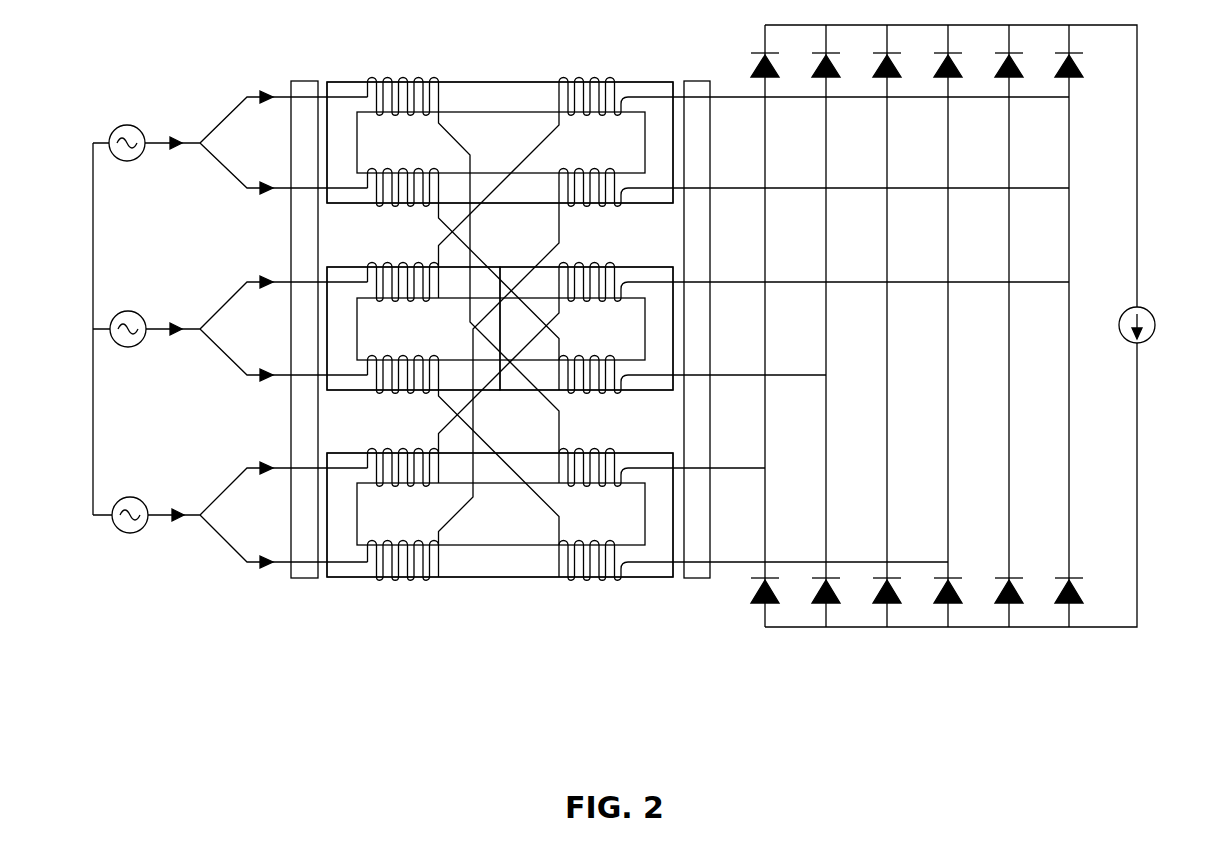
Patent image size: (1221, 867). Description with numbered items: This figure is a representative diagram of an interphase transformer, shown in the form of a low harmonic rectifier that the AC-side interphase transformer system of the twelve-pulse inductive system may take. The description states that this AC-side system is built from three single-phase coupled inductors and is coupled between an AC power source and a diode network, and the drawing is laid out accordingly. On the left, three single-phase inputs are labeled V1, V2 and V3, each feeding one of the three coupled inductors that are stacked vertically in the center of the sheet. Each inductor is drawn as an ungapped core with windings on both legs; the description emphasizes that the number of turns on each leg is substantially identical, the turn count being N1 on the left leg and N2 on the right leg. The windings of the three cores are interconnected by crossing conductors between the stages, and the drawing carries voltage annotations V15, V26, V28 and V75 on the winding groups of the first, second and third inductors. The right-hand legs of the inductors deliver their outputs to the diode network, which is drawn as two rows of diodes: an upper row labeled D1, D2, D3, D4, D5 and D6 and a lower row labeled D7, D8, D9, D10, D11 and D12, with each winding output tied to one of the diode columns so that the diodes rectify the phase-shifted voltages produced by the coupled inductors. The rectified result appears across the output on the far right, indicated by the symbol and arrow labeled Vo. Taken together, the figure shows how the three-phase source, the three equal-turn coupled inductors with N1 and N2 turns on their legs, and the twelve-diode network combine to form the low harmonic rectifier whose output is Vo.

The first phase input voltage source V1 is at (150, 113).
The second phase input voltage source V2 is at (150, 299).
The third phase input voltage source V3 is at (152, 487).
The number of turns on left leg N1 is at (403, 142).
The number of turns on right leg N2 is at (814, 142).
The winding voltage of first transformer V15 is at (432, 66).
The winding voltage of second transformer primary V26 is at (432, 252).
The winding voltage of second transformer secondary V28 is at (625, 252).
The winding voltage of third transformer V75 is at (432, 438).
The rectifier diode D1 is at (778, 68).
The rectifier diode D2 is at (839, 68).
The rectifier diode D3 is at (900, 68).
The rectifier diode D4 is at (961, 68).
The rectifier diode D5 is at (1022, 68).
The rectifier diode D6 is at (1082, 68).
The rectifier diode D7 is at (779, 593).
The rectifier diode D8 is at (839, 593).
The rectifier diode D9 is at (900, 593).
The rectifier diode D10 is at (965, 593).
The rectifier diode D11 is at (1026, 593).
The rectifier diode D12 is at (1086, 593).
The output voltage source Vo is at (1168, 278).